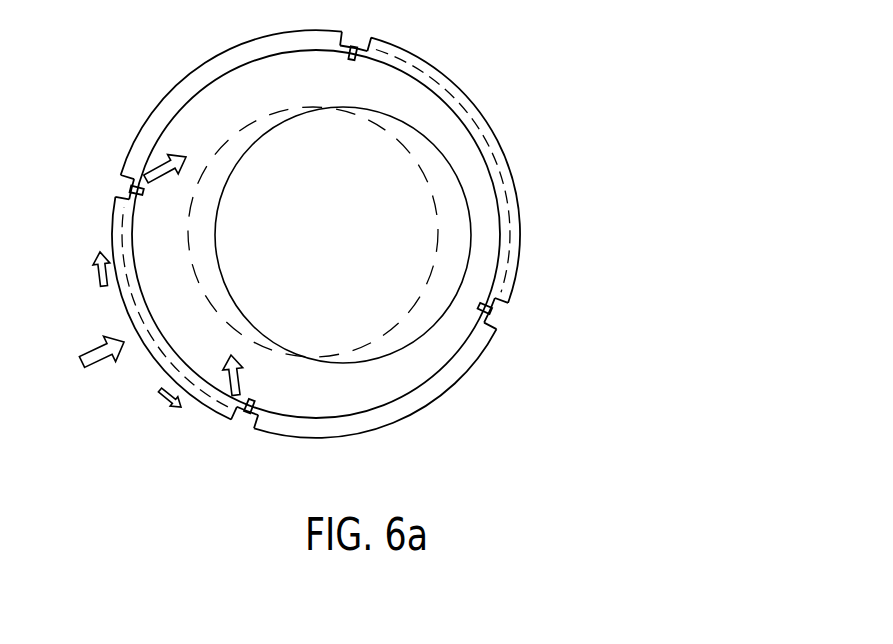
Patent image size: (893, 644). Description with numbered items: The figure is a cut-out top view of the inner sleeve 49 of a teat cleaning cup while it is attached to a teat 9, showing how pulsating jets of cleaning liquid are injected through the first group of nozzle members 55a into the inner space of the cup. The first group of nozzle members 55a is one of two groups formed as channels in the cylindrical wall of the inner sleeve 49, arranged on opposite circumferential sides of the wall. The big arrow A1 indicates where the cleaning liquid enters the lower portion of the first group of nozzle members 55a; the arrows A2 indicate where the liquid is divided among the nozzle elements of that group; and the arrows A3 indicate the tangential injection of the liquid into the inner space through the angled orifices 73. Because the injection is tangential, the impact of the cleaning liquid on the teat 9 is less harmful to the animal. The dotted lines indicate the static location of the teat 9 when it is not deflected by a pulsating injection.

The teat 9 is at (413, 200).
The inner sleeve 49 is at (466, 391).
The first group of nozzle members 55a is at (124, 309).
The orifices 73 is at (136, 193).
The arrow indicating entrance of the cleaning liquid A1 is at (88, 366).
The arrows indicating division of the cleaning liquid A2 is at (93, 270).
The arrows indicating tangential injection A3 is at (168, 156).